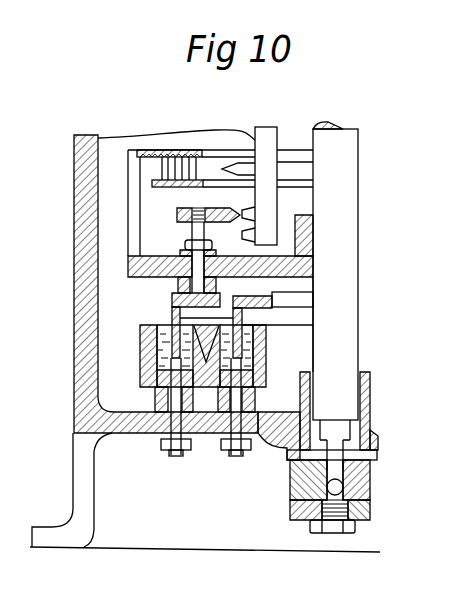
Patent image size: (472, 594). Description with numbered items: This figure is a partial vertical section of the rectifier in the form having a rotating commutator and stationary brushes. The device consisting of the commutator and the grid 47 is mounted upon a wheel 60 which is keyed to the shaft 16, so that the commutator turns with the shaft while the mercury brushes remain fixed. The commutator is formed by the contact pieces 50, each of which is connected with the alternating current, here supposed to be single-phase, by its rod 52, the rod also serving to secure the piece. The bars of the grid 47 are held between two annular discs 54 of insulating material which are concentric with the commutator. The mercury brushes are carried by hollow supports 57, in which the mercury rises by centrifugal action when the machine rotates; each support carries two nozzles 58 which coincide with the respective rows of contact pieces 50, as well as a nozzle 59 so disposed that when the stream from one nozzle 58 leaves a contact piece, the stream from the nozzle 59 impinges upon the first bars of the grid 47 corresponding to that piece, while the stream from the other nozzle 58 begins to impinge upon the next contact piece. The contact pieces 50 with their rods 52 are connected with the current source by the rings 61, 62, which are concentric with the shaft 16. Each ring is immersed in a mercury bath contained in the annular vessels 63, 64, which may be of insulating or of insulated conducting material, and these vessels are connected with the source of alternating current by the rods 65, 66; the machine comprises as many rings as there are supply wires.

The shaft 16 is at (358, 264).
The grid 47 is at (200, 169).
The contact pieces 50 is at (229, 204).
The rod 52 is at (197, 236).
The annular discs 54 is at (178, 150).
The hollow supports 57 is at (270, 150).
The nozzles 58 is at (250, 238).
The nozzle 59 is at (243, 135).
The wheel 60 is at (140, 272).
The ring 61 is at (172, 300).
The ring 62 is at (270, 300).
The annular vessel 63 is at (141, 356).
The annular vessel 64 is at (266, 352).
The rod 65 is at (171, 456).
The rod 66 is at (232, 456).